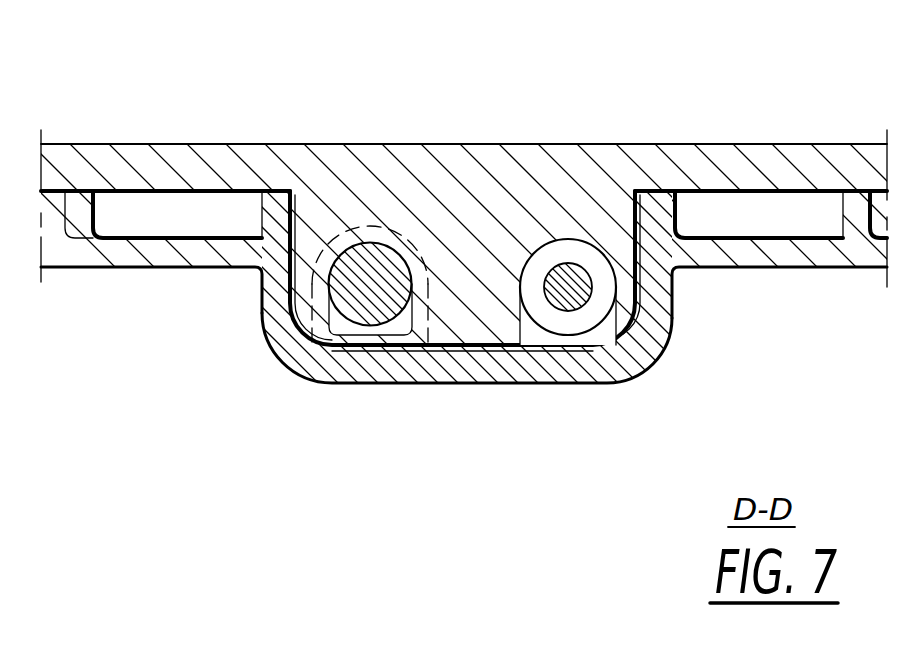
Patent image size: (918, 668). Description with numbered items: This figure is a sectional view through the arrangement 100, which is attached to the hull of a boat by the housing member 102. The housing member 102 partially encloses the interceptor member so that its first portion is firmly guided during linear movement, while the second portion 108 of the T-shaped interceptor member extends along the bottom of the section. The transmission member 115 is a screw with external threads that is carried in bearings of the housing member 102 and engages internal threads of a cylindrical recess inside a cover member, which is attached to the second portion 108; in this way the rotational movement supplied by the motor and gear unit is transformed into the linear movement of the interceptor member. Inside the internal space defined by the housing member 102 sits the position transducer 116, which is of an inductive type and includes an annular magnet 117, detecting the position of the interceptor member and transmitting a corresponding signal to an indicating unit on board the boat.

The arrangement 100 is at (459, 243).
The second portion 108 is at (520, 183).
The housing member 102 is at (262, 312).
The transmission member 115 is at (387, 308).
The position transducer 116 is at (573, 308).
The annular magnet 117 is at (571, 354).